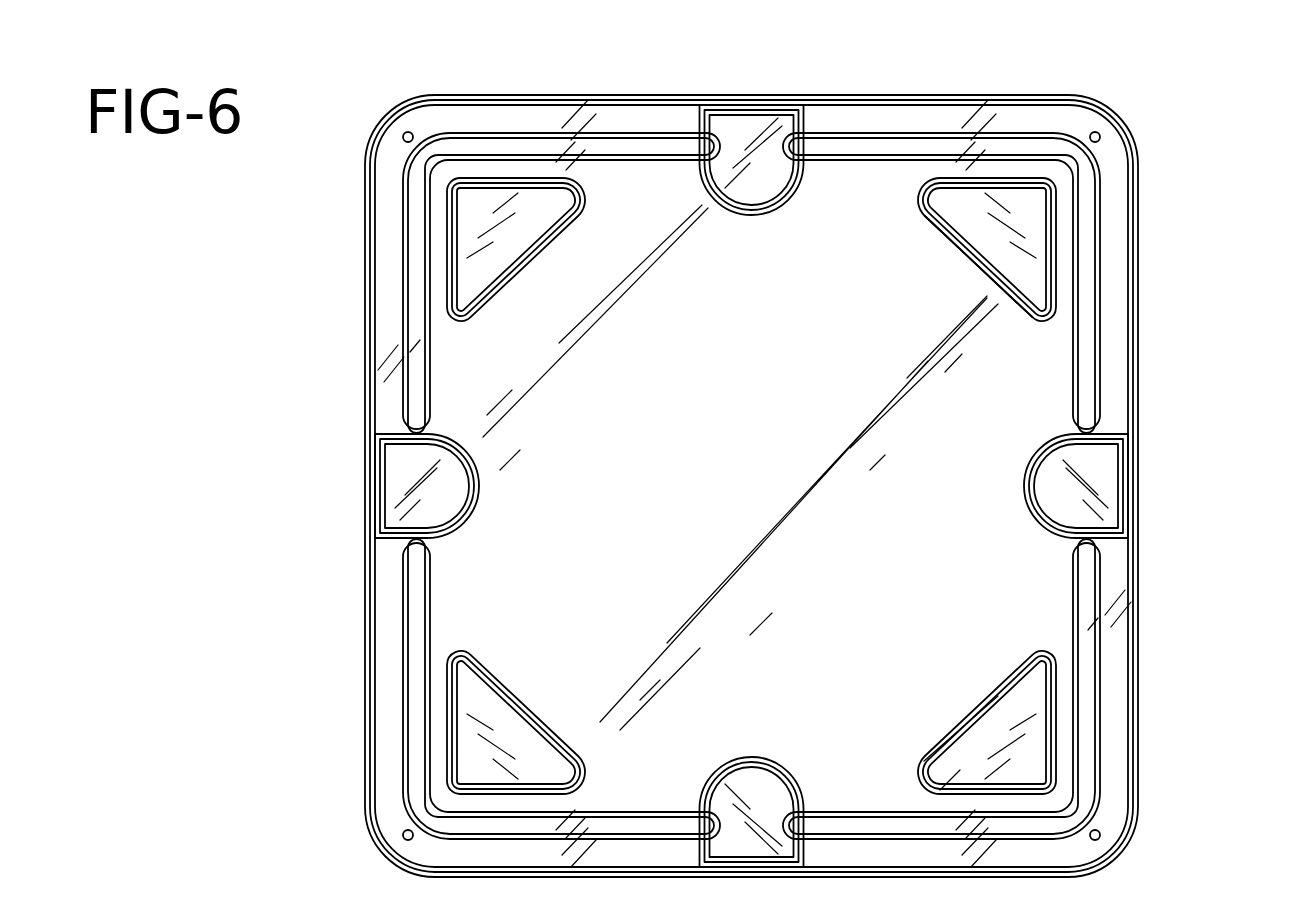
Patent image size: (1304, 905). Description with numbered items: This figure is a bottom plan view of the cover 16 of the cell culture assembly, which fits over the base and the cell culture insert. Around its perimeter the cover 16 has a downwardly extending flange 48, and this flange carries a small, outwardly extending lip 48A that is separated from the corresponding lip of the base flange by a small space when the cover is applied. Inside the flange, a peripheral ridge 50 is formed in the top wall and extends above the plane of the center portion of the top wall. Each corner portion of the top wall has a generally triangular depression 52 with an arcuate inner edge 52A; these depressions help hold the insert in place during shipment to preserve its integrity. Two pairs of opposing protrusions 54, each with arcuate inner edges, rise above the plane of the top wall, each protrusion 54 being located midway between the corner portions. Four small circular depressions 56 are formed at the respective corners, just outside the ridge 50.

The cover 16 is at (1140, 328).
The downwardly extending flange 48 is at (1140, 637).
The outwardly extending lip 48A is at (1140, 570).
The peripheral ridge 50 is at (1097, 360).
The triangular depression 52 is at (470, 218).
The arcuate inner edge 52A is at (958, 245).
The protrusion 54 is at (757, 137).
The circular depression 56 is at (404, 133).